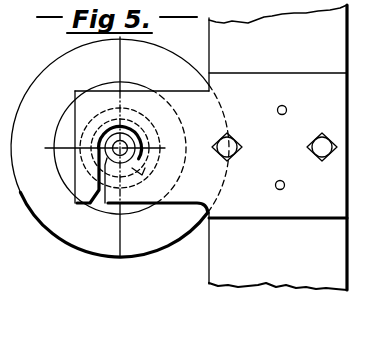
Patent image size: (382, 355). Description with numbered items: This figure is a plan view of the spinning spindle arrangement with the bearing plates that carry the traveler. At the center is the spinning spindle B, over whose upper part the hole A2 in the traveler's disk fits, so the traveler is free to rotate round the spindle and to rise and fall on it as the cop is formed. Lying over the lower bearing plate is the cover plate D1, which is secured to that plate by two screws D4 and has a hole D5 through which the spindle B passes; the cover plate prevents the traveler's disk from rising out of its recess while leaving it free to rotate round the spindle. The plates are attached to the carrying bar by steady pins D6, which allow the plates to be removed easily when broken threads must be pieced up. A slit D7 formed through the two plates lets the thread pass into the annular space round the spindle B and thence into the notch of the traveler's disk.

The hole A2 is at (70, 149).
The spinning spindle B is at (140, 148).
The cover plate D1 is at (182, 147).
The screws D4 is at (236, 139).
The hole D5 is at (137, 131).
The steady pins D6 is at (290, 101).
The slit D7 is at (91, 205).